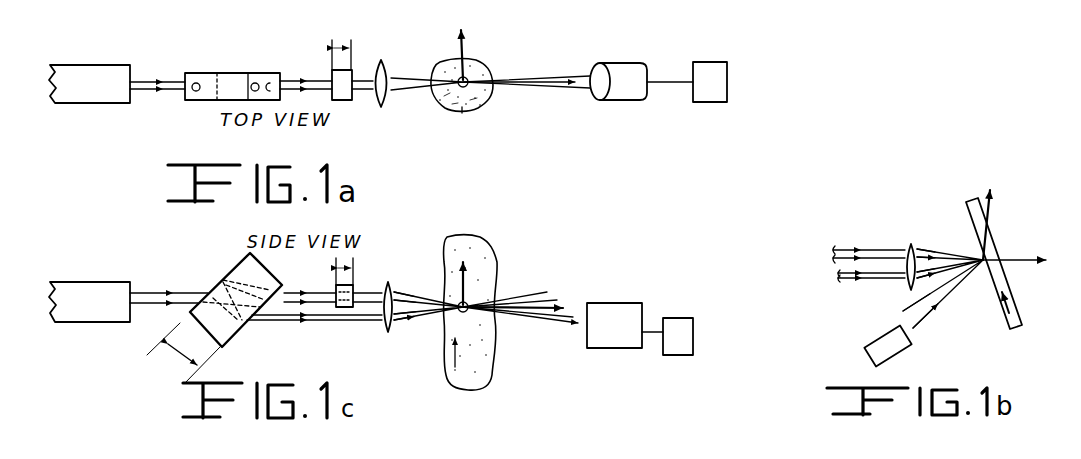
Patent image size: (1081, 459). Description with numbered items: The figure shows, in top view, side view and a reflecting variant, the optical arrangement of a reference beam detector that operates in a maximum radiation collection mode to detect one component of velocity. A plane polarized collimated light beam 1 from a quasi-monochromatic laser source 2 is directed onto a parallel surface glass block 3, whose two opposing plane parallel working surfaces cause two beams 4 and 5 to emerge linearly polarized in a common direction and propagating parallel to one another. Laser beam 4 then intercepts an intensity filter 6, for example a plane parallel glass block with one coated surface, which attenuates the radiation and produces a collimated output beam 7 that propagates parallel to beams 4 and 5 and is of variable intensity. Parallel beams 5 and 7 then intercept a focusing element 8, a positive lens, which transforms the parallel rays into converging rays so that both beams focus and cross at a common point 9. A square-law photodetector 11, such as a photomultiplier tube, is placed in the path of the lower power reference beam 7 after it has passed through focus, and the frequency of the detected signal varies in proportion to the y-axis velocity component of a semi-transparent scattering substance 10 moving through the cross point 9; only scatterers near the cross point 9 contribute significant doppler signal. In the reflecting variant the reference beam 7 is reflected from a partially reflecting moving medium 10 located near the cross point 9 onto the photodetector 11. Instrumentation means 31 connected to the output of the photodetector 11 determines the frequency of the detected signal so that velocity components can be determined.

In FIG. 1a, the plane polarized collimated light beam 1 is at (135, 81).
In FIG. 1c, the plane polarized collimated light beam 1 is at (148, 293).
In FIG. 1a, the quasi-monochromatic laser source 2 is at (85, 103).
In FIG. 1c, the quasi-monochromatic laser source 2 is at (90, 282).
In FIG. 1a, the parallel surface glass block 3 is at (223, 73).
In FIG. 1c, the parallel surface glass block 3 is at (273, 272).
In FIG. 1a, the laser beam 4 is at (292, 89).
In FIG. 1c, the laser beam 4 is at (296, 290).
In FIG. 1a, the beam 5 is at (363, 73).
In FIG. 1c, the beam 5 is at (280, 327).
In FIG. 1b, the beam 5 is at (870, 281).
In FIG. 1a, the intensity filter 6 is at (331, 74).
In FIG. 1c, the intensity filter 6 is at (353, 285).
In FIG. 1a, the reference beam 7 is at (540, 73).
In FIG. 1c, the reference beam 7 is at (365, 292).
In FIG. 1b, the reference beam 7 is at (867, 245).
In FIG. 1a, the focusing element 8 is at (388, 62).
In FIG. 1c, the focusing element 8 is at (390, 330).
In FIG. 1b, the focusing element 8 is at (912, 245).
In FIG. 1a, the cross point 9 is at (468, 77).
In FIG. 1c, the cross point 9 is at (467, 305).
In FIG. 1b, the cross point 9 is at (997, 248).
In FIG. 1a, the semi-transparent substance 10 is at (482, 107).
In FIG. 1c, the semi-transparent substance 10 is at (443, 358).
In FIG. 1b, the semi-transparent substance 10 is at (1012, 332).
In FIG. 1a, the square-law photodetector 11 is at (623, 62).
In FIG. 1c, the square-law photodetector 11 is at (613, 303).
In FIG. 1b, the square-law photodetector 11 is at (898, 355).
In FIG. 1a, the instrumentation means 31 is at (712, 62).
In FIG. 1c, the instrumentation means 31 is at (680, 318).